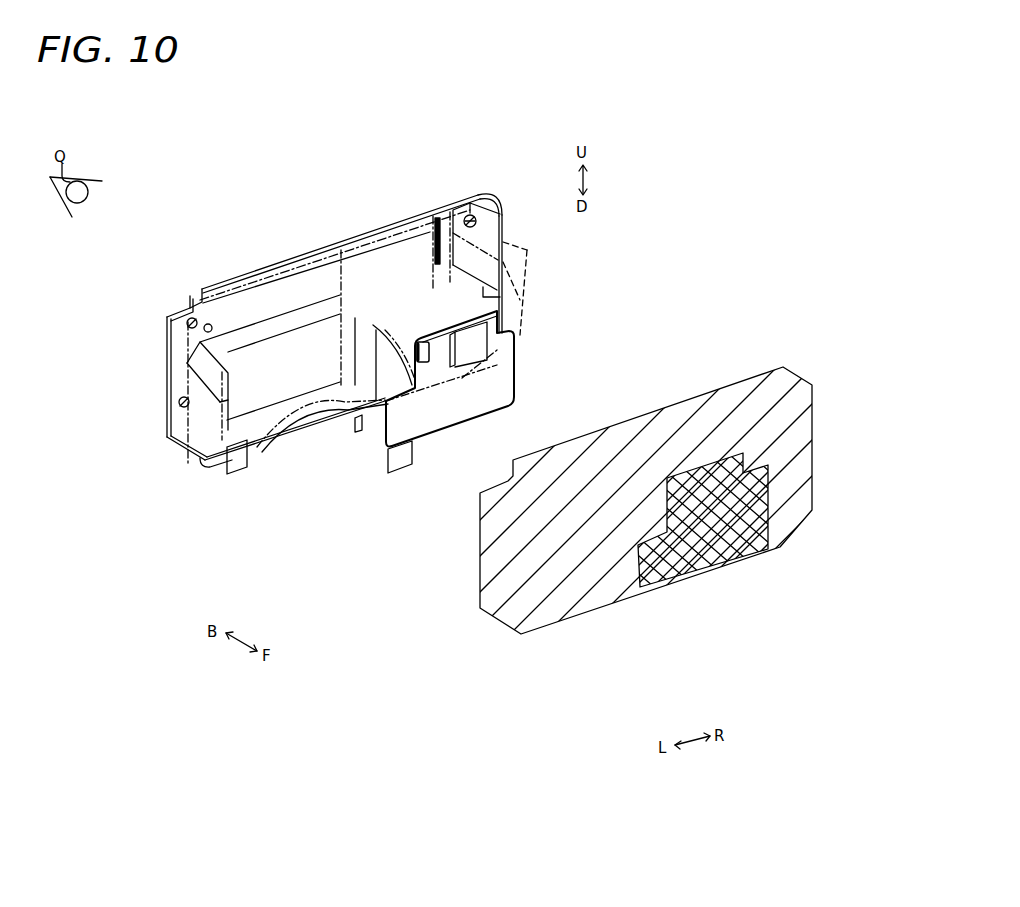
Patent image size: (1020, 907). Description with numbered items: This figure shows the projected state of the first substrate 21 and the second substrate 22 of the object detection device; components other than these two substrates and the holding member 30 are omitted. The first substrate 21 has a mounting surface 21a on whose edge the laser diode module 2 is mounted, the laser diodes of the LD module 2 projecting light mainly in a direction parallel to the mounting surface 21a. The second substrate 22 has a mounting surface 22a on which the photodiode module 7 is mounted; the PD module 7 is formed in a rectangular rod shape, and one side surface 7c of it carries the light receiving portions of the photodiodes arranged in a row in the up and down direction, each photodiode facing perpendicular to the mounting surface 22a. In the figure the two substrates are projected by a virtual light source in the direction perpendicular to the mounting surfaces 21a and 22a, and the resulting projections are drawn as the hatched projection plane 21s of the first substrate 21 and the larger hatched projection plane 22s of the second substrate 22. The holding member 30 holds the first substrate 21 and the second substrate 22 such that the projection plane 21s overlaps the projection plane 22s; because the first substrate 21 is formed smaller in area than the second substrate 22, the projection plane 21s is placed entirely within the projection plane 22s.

The laser diode module 2 is at (430, 376).
The photodiode module 7 is at (440, 212).
The side surface of the PD module 7c is at (439, 218).
The first substrate 21 is at (516, 371).
The mounting surface of the first substrate 21a is at (488, 392).
The projection plane of the first substrate 21s is at (617, 572).
The second substrate 22 is at (372, 224).
The mounting surface of the second substrate 22a is at (407, 223).
The projection plane of the second substrate 22s is at (540, 634).
The holding member 30 is at (241, 470).